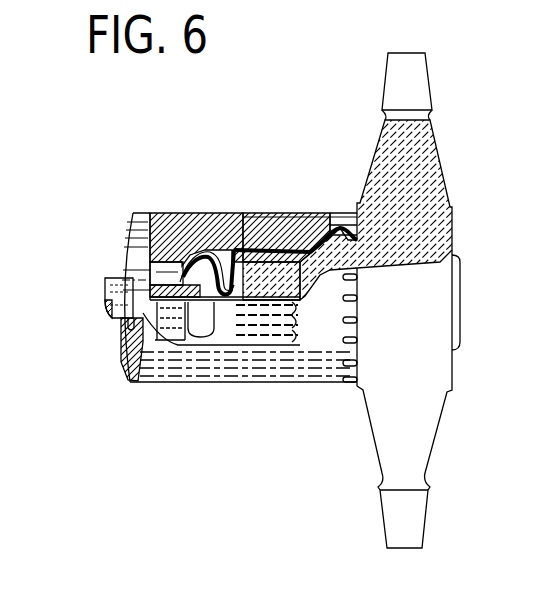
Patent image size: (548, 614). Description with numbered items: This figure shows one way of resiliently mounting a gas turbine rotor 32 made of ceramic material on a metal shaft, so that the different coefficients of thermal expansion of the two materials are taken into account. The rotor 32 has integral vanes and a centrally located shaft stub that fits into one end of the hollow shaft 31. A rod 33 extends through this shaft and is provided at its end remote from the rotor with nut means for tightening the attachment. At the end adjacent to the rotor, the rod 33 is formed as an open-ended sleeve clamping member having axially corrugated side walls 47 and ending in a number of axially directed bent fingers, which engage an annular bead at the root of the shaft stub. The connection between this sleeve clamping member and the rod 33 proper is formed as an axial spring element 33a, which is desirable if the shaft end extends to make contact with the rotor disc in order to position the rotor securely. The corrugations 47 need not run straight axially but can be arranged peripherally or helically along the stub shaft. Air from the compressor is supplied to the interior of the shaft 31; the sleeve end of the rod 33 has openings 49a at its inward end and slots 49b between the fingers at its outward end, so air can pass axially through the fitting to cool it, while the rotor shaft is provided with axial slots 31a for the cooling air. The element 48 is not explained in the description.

The hollow shaft 31 is at (164, 235).
The axial slots 31a is at (350, 384).
The rotor 32 is at (416, 346).
The rod 33 is at (115, 292).
The axial spring element 33a is at (203, 240).
The axially corrugated side walls 47 is at (262, 240).
The spacer 48 is at (343, 220).
The openings 49a is at (224, 240).
The slots 49b is at (318, 232).